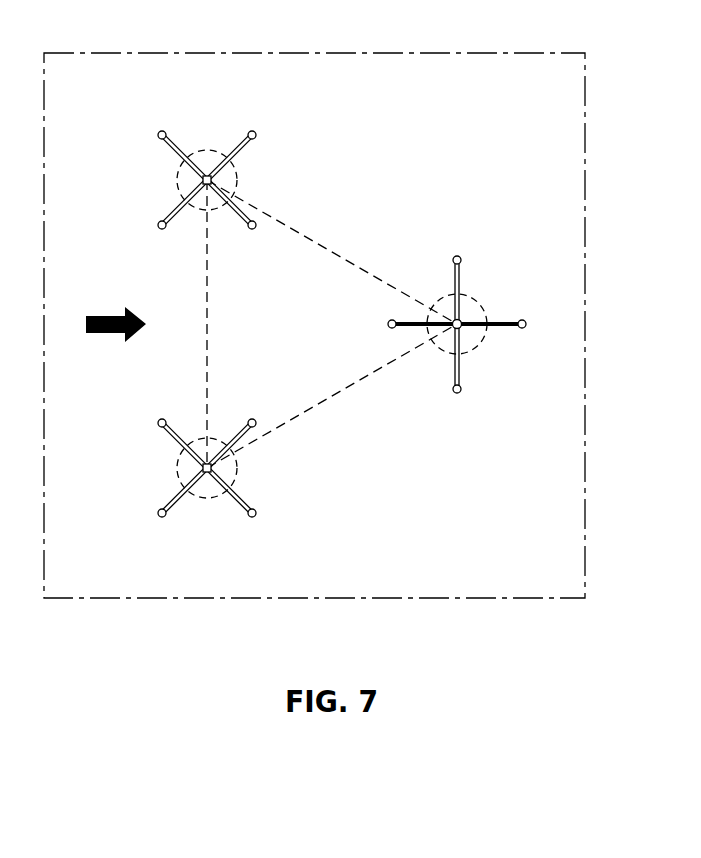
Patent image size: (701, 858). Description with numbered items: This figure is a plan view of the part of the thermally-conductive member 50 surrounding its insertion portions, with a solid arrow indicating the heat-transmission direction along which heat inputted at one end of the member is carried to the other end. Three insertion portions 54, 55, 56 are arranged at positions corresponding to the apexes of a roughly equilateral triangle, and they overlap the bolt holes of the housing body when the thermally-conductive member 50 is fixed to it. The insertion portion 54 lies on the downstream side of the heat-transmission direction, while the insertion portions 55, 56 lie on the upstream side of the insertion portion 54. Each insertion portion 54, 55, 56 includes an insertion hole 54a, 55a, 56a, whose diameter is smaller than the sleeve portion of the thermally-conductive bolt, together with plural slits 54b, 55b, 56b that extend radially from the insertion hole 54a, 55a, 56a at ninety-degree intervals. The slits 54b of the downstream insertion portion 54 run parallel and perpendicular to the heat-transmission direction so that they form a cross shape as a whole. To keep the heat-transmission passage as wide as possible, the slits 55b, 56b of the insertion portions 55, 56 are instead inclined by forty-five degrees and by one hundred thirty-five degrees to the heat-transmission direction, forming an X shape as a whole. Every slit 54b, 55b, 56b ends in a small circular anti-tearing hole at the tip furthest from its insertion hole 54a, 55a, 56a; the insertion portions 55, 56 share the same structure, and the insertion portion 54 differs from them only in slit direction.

The thermally-conductive member 50 is at (395, 83).
The insertion portion 54 is at (484, 316).
The insertion hole 54a is at (461, 327).
The slits 54b is at (505, 321).
The insertion portion 55 is at (176, 146).
The insertion hole 55a is at (202, 181).
The slits 55b is at (237, 146).
The insertion portion 56 is at (199, 489).
The insertion hole 56a is at (210, 474).
The slits 56b is at (163, 438).